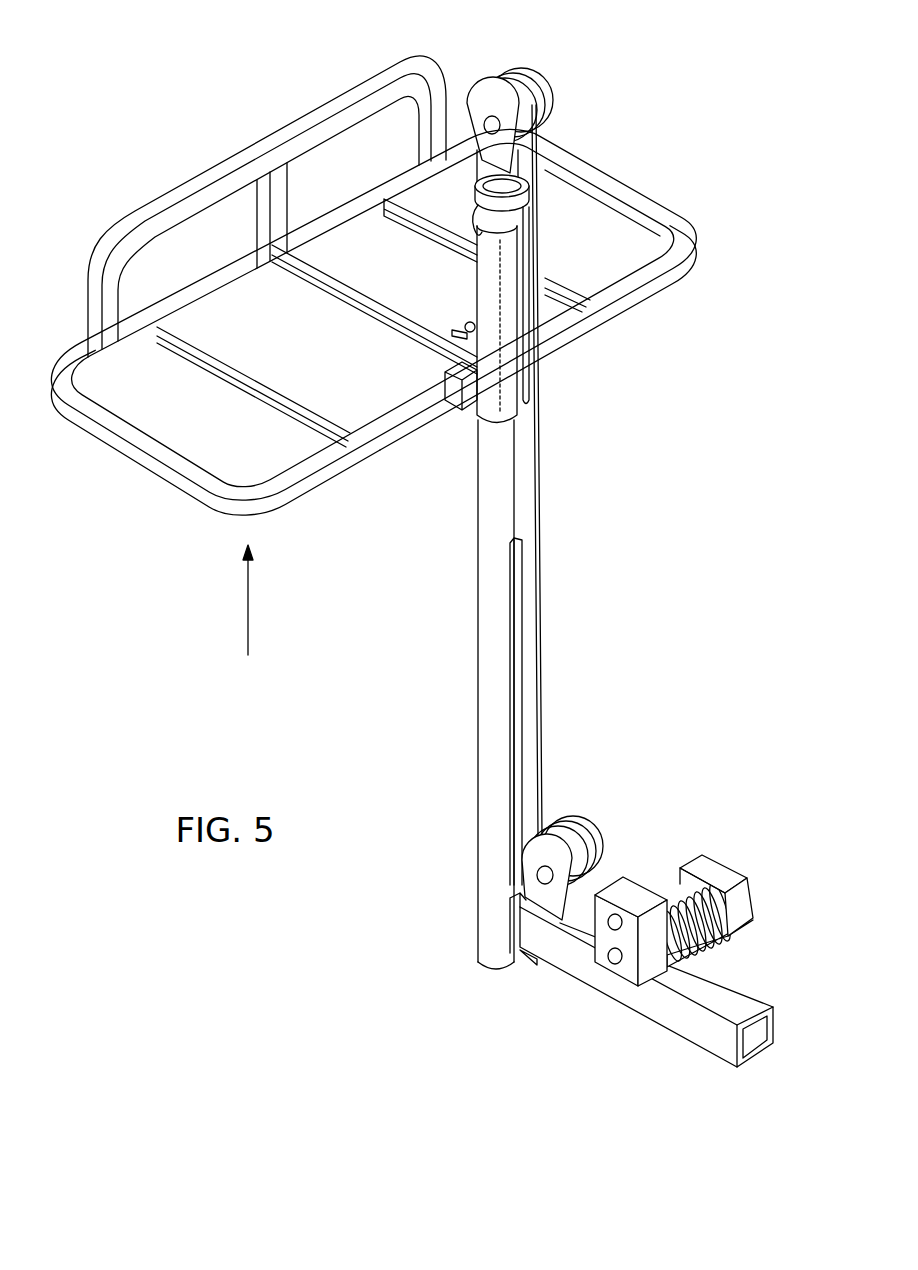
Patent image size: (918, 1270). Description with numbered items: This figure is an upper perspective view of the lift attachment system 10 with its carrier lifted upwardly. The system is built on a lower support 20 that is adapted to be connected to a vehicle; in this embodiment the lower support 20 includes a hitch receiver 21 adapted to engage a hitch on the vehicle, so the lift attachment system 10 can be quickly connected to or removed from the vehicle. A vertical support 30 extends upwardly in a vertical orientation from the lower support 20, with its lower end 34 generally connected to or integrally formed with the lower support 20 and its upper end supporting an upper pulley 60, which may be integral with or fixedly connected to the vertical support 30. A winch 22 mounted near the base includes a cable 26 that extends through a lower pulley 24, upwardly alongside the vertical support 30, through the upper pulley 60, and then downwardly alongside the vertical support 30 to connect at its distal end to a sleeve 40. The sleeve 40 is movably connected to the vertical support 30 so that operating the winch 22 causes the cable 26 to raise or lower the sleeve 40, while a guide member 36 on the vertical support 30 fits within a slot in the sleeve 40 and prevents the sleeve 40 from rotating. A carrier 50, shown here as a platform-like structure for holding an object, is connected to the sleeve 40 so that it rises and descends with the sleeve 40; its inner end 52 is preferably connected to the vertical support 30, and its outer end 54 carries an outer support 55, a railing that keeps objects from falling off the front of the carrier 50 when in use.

The lift attachment system 10 is at (385, 910).
The lower support 20 is at (690, 1022).
The hitch receiver 21 is at (750, 1042).
The winch 22 is at (713, 870).
The lower pulley 24 is at (590, 855).
The cable 26 is at (541, 650).
The vertical support 30 is at (490, 542).
The lower end 34 is at (483, 957).
The guide member 36 is at (523, 563).
The sleeve 40 is at (487, 410).
The carrier 50 is at (627, 188).
The inner end 52 is at (655, 300).
The outer end 54 is at (72, 358).
The outer support 55 is at (205, 172).
The upper pulley 60 is at (538, 100).